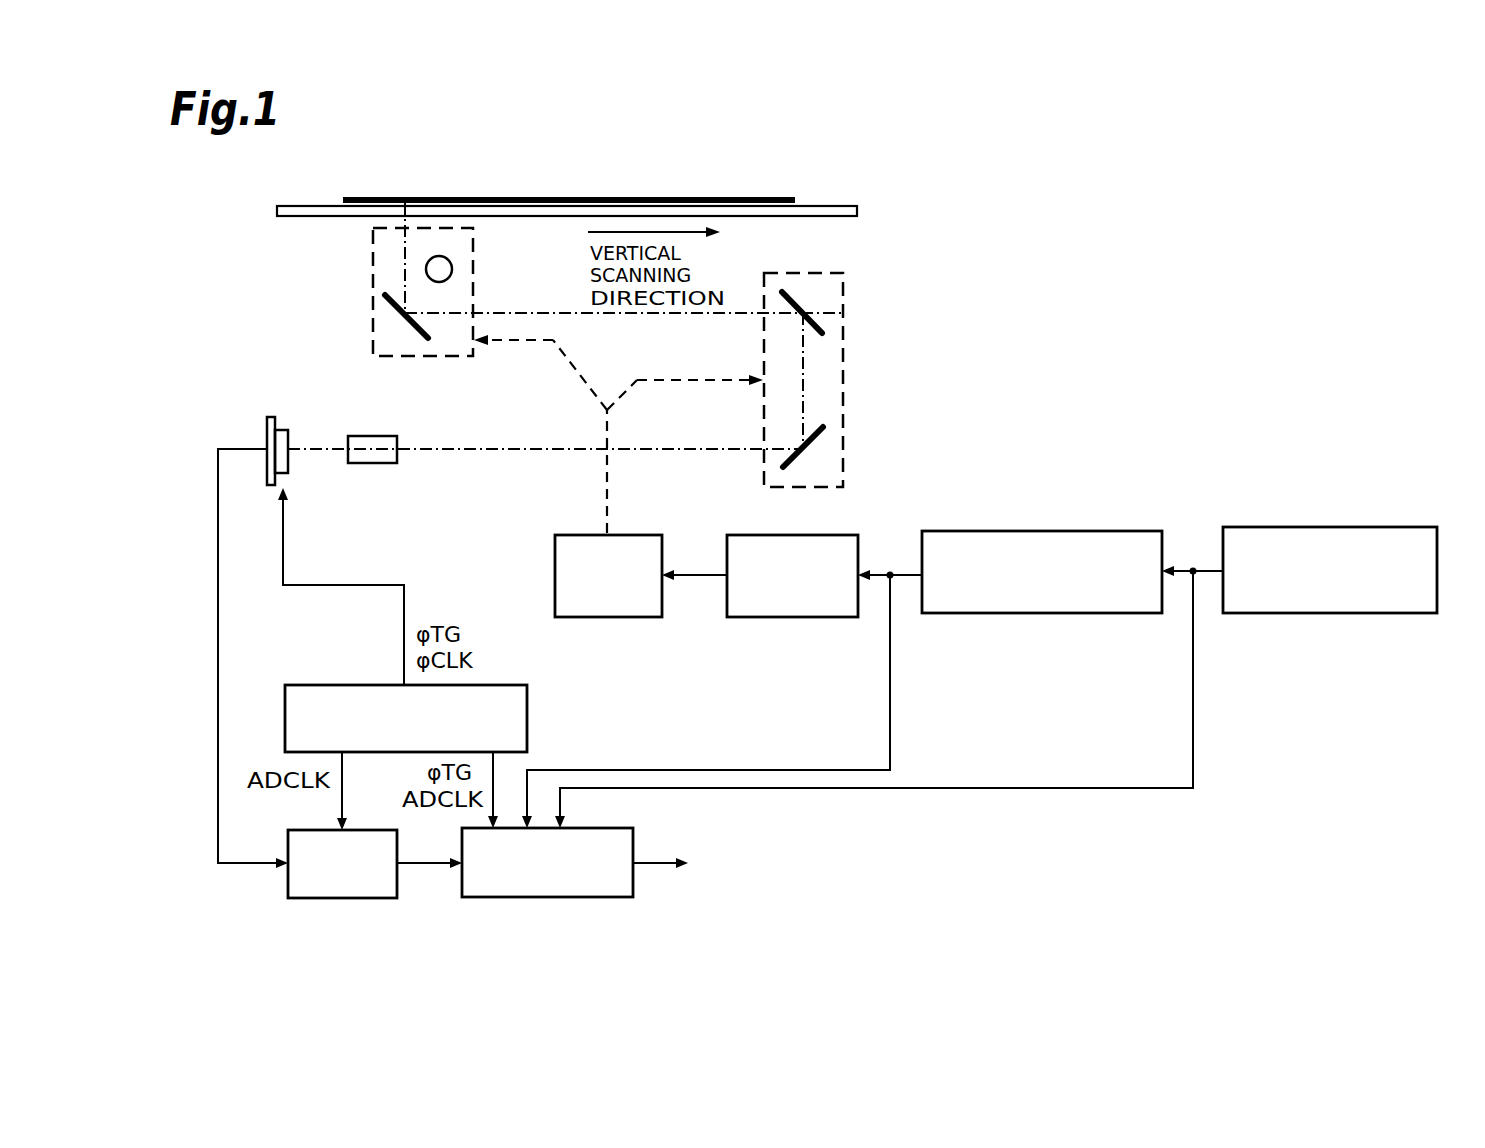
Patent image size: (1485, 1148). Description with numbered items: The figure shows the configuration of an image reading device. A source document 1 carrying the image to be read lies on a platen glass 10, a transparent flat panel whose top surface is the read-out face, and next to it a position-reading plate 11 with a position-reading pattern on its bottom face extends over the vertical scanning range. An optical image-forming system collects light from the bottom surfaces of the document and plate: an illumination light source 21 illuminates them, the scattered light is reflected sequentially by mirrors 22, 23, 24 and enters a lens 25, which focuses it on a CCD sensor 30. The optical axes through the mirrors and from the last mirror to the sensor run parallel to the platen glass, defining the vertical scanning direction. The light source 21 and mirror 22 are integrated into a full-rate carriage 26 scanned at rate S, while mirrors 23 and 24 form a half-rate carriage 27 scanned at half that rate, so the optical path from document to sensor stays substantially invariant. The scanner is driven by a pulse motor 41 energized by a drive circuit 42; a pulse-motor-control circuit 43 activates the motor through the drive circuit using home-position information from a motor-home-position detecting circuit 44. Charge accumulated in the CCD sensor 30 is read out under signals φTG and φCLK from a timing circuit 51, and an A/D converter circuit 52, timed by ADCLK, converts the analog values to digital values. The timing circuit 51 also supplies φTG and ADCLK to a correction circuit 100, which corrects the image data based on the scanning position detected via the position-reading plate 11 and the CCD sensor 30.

The source document 1 is at (770, 197).
The platen glass 10 is at (610, 190).
The position-reading plate 11 is at (838, 205).
The illumination light source 21 is at (453, 269).
The mirror 22 is at (380, 305).
The mirror 23 is at (812, 317).
The mirror 24 is at (810, 443).
The lens 25 is at (370, 464).
The full-rate carriage 26 is at (372, 262).
The half-rate carriage 27 is at (843, 380).
The CCD sensor 30 is at (281, 430).
The pulse motor 41 is at (610, 618).
The drive circuit 42 is at (795, 618).
The pulse-motor-control circuit 43 is at (1043, 614).
The motor-home-position detecting circuit 44 is at (1313, 614).
The timing circuit 51 is at (528, 715).
The A/D converter circuit 52 is at (345, 899).
The correction circuit 100 is at (530, 898).